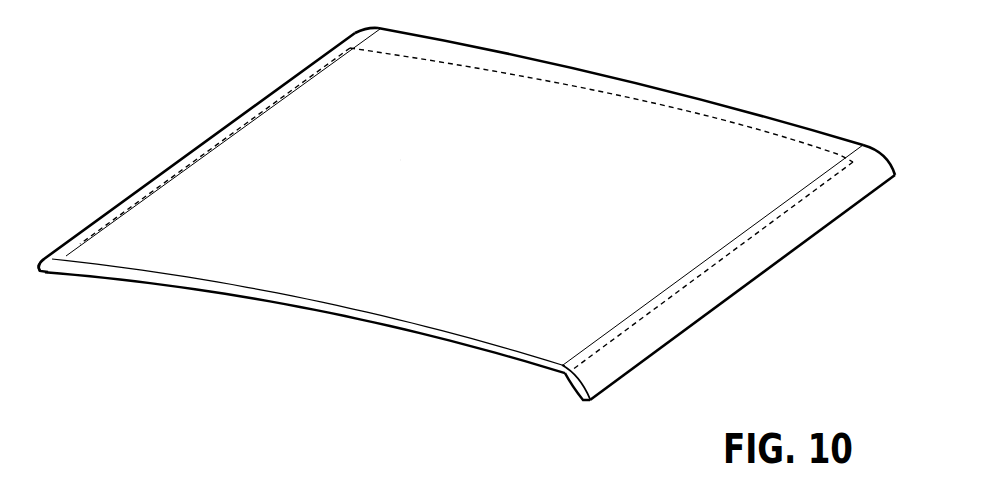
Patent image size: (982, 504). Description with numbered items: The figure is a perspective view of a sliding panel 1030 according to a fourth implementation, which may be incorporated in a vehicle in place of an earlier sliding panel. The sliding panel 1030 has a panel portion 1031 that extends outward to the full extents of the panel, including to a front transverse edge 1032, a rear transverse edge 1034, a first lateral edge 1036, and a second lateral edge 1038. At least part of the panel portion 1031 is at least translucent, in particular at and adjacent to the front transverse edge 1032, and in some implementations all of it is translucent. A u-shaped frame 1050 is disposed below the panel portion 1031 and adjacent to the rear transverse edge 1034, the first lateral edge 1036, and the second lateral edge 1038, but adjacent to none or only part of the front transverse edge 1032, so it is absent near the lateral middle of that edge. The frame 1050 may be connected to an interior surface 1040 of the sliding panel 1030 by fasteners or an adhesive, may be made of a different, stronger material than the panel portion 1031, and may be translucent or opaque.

The sliding panel 1030 is at (467, 228).
The panel portion 1031 is at (307, 283).
The front transverse edge 1032 is at (418, 328).
The rear transverse edge 1034 is at (697, 97).
The first lateral edge 1036 is at (680, 318).
The second lateral edge 1038 is at (208, 136).
The interior surface 1040 is at (517, 362).
The frame 1050 is at (53, 263).